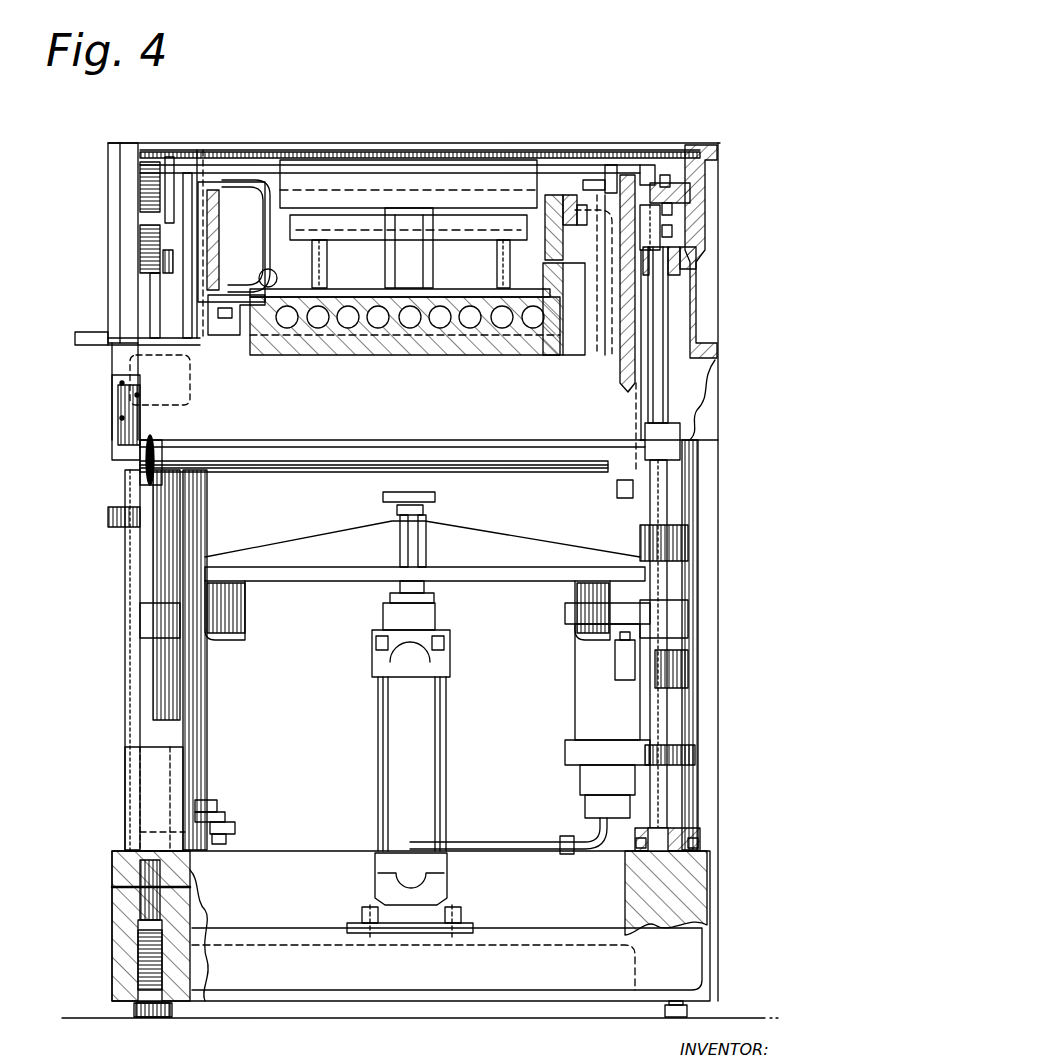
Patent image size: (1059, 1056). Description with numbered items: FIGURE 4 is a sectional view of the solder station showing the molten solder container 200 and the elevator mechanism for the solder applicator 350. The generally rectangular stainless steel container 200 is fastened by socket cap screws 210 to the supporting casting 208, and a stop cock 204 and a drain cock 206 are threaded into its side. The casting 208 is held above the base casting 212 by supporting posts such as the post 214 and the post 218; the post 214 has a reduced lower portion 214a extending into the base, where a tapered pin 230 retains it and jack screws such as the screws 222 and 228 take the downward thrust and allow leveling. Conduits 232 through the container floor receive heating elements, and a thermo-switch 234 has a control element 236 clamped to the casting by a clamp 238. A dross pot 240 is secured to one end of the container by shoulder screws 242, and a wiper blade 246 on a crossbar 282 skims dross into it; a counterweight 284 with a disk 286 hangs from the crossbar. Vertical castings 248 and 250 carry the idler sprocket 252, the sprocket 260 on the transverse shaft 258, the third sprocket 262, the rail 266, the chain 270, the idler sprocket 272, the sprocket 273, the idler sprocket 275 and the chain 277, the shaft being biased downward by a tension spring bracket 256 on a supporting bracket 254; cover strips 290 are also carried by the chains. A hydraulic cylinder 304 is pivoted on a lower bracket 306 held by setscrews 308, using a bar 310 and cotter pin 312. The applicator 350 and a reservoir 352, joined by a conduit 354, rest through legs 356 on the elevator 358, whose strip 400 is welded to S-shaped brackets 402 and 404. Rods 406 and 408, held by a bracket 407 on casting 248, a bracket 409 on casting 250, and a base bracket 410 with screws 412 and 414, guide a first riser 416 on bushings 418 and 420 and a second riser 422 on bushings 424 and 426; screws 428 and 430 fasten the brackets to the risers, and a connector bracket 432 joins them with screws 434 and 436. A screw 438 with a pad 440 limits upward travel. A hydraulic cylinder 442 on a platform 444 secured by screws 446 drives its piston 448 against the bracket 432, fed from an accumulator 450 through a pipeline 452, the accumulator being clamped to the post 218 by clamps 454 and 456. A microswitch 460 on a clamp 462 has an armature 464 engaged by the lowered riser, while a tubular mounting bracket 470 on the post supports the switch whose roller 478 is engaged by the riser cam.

The container for molten solder 200 is at (255, 195).
The stop cock 204 is at (560, 330).
The drain cock 206 is at (268, 278).
The supporting casting 208 is at (268, 430).
The screws 210 is at (255, 325).
The base casting 212 is at (250, 872).
The supporting post 214 is at (148, 804).
The lower portion of reduced diameter 214a is at (140, 860).
The supporting post 218 is at (690, 495).
The jack screw 222 is at (148, 968).
The jack screw 228 is at (692, 1012).
The tapered pin 230 is at (115, 888).
The conduits 232 is at (312, 330).
The thermo-switch 234 is at (78, 342).
The control element 236 is at (218, 365).
The clamp 238 is at (185, 316).
The dross pot 240 is at (540, 265).
The shoulder screw 242 is at (572, 225).
The wiper blade 246 is at (415, 185).
The vertical casting 248 is at (120, 172).
The vertical casting 250 is at (690, 255).
The idler sprocket 252 is at (160, 215).
The supporting bracket 254 is at (130, 406).
The tension spring bracket 256 is at (120, 392).
The transverse shaft 258 is at (348, 462).
The second sprocket 260 is at (145, 478).
The third sprocket 262 is at (145, 280).
The rail 266 is at (142, 198).
The chain 270 is at (120, 162).
The idler sprocket 272 is at (655, 160).
The sprocket 273 is at (680, 470).
The idler sprocket 275 is at (703, 228).
The chain 277 is at (680, 172).
The crossbar 282 is at (322, 165).
The counterweight 284 is at (167, 160).
The disk 286 is at (142, 230).
The strips 290 is at (345, 225).
The hydraulic cylinder 304 is at (195, 732).
The lower bracket 306 is at (225, 843).
The setscrews 308 is at (140, 832).
The bar 310 is at (210, 825).
The cotter pin 312 is at (208, 810).
The solder applicator 350 is at (332, 215).
The solder reservoir 352 is at (450, 195).
The conduit 354 is at (415, 255).
The legs 356 is at (322, 258).
The elevator 358 is at (452, 290).
The horizontal metallic strip 400 is at (378, 268).
The S-shaped metallic bracket 402 is at (233, 165).
The S-shaped metallic bracket 404 is at (612, 185).
The vertical rod 406 is at (150, 574).
The bracket 407 is at (150, 294).
The vertical rod 408 is at (660, 335).
The bracket 409 is at (678, 245).
The bracket 410 is at (670, 840).
The screw 412 is at (660, 830).
The screw 414 is at (695, 842).
The first riser 416 is at (205, 245).
The ball bearing bushing 418 is at (145, 618).
The ball bearing bushing 420 is at (108, 435).
The second riser 422 is at (628, 320).
The bushing 424 is at (680, 625).
The bushing 426 is at (688, 432).
The screws 428 is at (203, 175).
The screws 430 is at (612, 180).
The horizontal riser connector bracket 432 is at (500, 575).
The screws 434 is at (240, 553).
The screws 436 is at (600, 555).
The vertical screw 438 is at (430, 512).
The pad 440 is at (438, 497).
The hydraulic cylinder 442 is at (420, 826).
The platform 444 is at (455, 890).
The screws 446 is at (365, 910).
The piston 448 is at (430, 598).
The accumulator 450 is at (595, 718).
The pipeline 452 is at (455, 845).
The clamp 454 is at (695, 752).
The clamp 456 is at (690, 610).
The microswitch 460 is at (628, 668).
The mounting bracket or clamp 462 is at (690, 666).
The armature 464 is at (620, 640).
The tubular mounting bracket 470 is at (690, 545).
The roller 478 is at (620, 490).